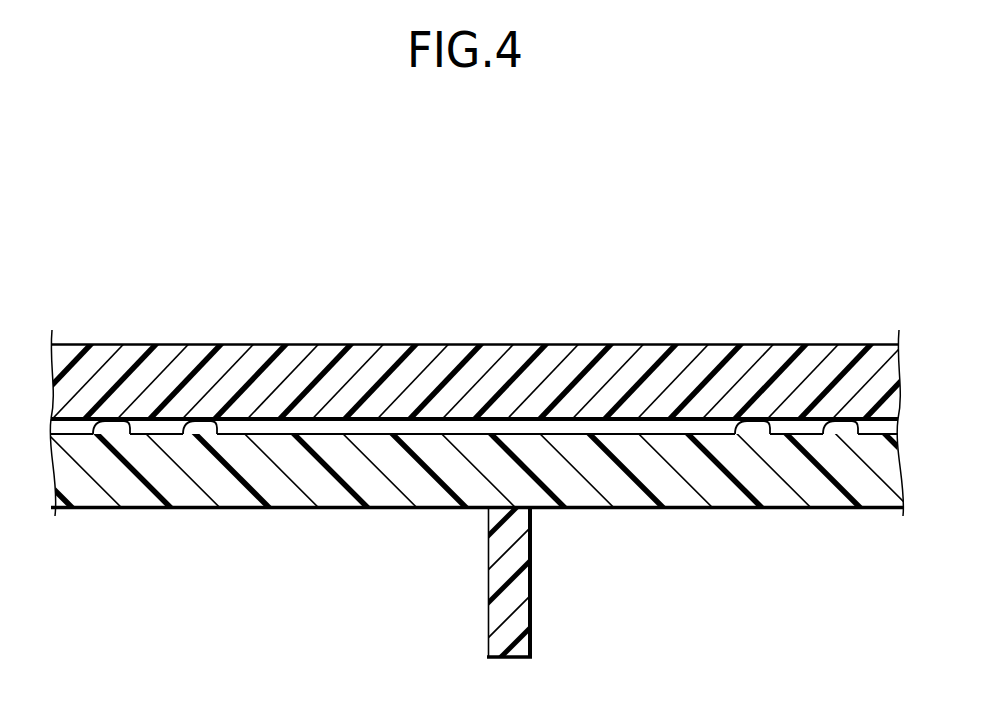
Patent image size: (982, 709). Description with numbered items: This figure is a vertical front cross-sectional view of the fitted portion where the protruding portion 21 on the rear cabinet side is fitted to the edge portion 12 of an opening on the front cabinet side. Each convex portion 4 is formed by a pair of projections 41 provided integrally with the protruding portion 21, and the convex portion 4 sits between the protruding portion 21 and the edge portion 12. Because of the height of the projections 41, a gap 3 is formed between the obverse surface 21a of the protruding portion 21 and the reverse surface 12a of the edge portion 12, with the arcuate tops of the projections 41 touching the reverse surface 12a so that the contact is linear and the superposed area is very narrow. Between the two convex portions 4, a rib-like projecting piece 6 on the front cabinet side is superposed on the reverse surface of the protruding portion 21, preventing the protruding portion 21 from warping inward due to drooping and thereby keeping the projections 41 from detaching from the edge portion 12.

The convex portion 4 is at (238, 266).
The projection 41 is at (117, 424).
The edge portion of the opening 12 is at (473, 344).
The reverse surface 12a is at (385, 418).
The protruding portion 21 is at (380, 508).
The obverse surface 21a is at (272, 432).
The gap 3 is at (660, 426).
The rib-like projecting piece 6 is at (533, 617).